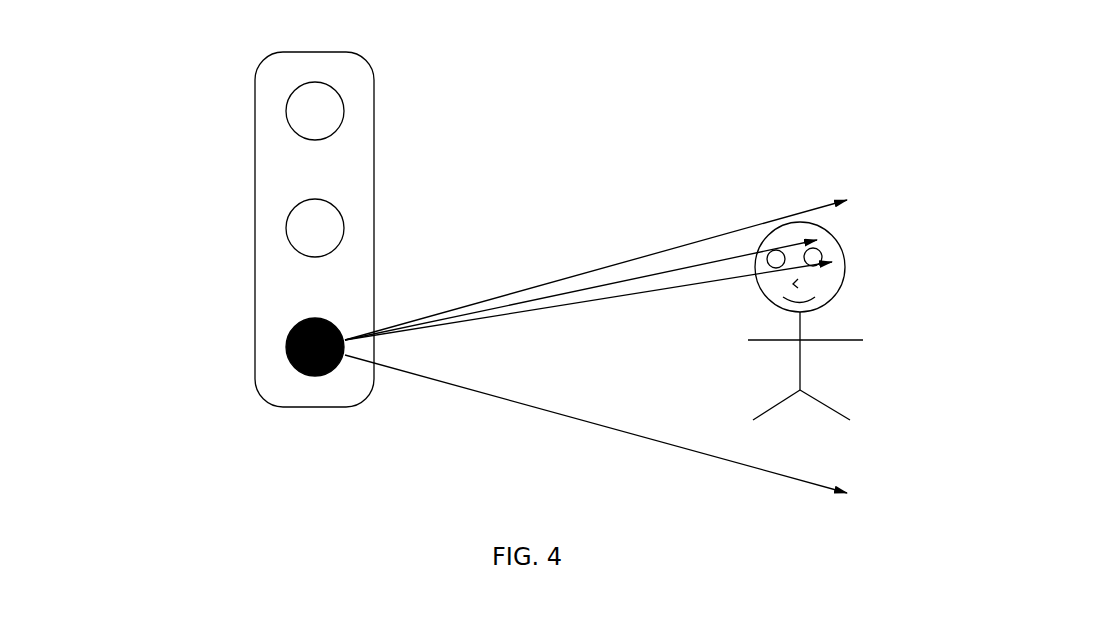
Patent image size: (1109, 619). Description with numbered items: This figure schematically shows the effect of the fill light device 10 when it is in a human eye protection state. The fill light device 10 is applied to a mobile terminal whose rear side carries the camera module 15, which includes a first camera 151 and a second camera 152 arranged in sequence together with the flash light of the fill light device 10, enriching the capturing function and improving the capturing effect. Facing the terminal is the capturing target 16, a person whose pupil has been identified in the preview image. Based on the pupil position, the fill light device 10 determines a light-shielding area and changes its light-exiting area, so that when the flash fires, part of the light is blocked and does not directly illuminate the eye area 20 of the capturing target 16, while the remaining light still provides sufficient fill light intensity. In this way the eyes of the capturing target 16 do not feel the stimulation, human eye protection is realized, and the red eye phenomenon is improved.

The camera module 15 is at (138, 32).
The first camera 151 is at (285, 113).
The second camera 152 is at (285, 230).
The fill light device 10 is at (285, 353).
The eye area 20 is at (683, 275).
The capturing target 16 is at (843, 285).